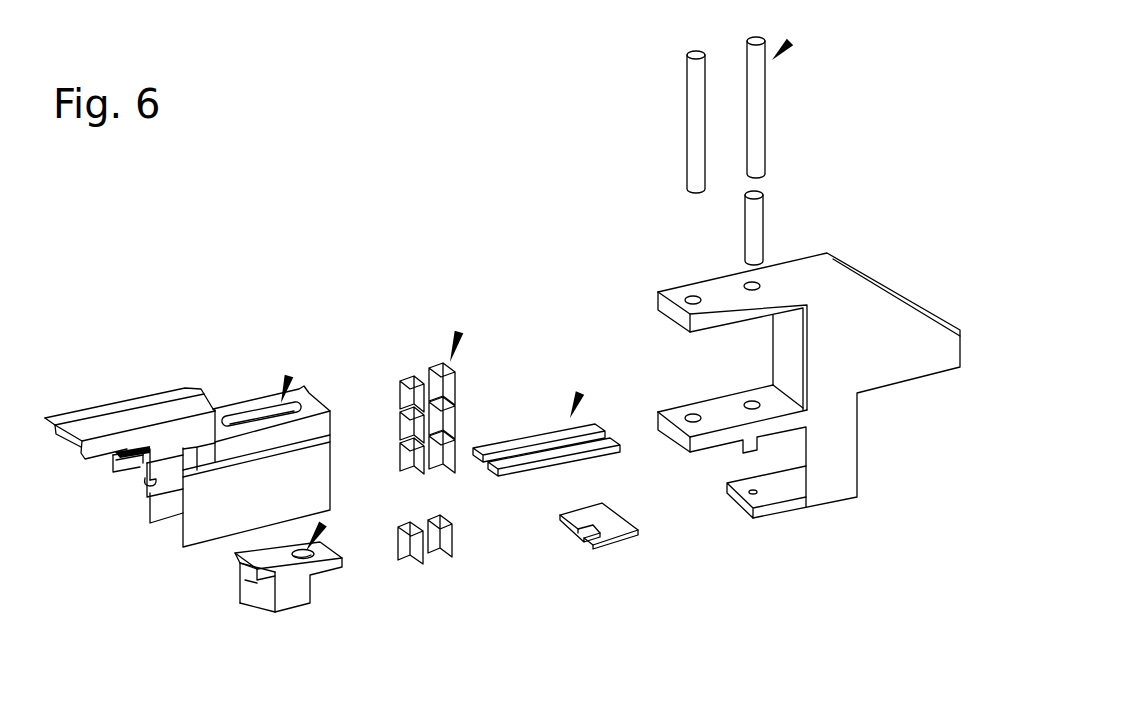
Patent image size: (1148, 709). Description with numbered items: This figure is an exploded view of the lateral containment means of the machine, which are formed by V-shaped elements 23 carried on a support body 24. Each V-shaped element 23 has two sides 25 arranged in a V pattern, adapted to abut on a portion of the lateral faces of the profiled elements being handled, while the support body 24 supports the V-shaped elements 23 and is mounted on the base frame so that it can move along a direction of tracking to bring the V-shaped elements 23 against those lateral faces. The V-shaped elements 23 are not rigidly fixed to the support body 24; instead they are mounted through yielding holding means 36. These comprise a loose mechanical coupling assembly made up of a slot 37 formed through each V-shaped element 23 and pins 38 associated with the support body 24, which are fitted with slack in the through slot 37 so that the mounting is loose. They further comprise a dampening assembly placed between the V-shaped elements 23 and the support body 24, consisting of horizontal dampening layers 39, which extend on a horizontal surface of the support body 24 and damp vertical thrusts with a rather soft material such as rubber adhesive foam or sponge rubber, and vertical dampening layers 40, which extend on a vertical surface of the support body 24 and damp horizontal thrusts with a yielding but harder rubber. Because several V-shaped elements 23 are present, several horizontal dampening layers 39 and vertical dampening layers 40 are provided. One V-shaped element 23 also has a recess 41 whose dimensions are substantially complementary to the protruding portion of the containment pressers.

The V-shaped element 23 is at (160, 438).
The support body 24 is at (867, 340).
The sides 25 is at (167, 542).
The yielding holding means 36 is at (289, 376).
The slot 37 is at (243, 417).
The pin 38 is at (697, 135).
The horizontal dampening layer 39 is at (527, 467).
The vertical dampening layer 40 is at (398, 425).
The recess 41 is at (110, 417).